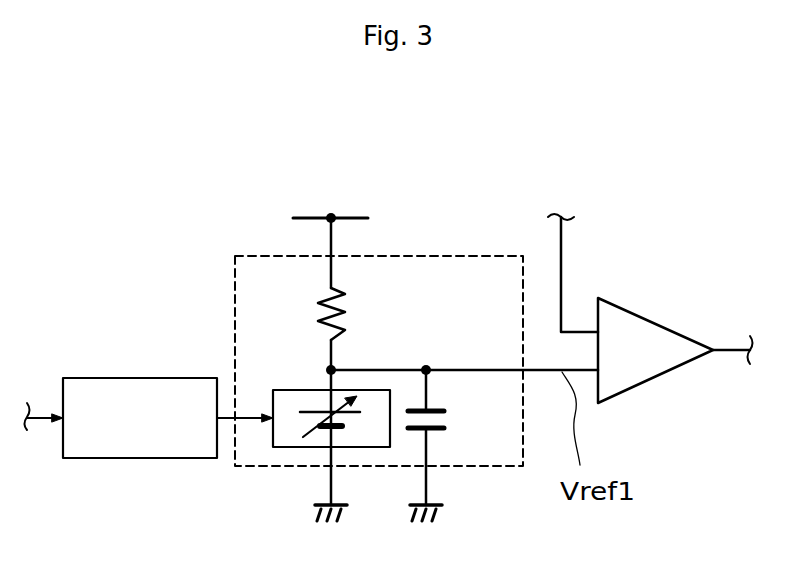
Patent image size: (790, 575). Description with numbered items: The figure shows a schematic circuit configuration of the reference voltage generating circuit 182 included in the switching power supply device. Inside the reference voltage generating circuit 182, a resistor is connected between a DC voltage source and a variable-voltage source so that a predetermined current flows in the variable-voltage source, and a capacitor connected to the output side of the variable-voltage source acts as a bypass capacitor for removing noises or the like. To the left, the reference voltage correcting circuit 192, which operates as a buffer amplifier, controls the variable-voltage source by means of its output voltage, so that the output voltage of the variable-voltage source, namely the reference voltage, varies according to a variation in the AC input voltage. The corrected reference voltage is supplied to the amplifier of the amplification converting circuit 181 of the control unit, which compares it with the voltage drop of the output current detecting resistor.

The amplification converting circuit 181 is at (650, 322).
The reference voltage generating circuit 182 is at (445, 256).
The reference voltage correcting circuit 192 is at (143, 460).